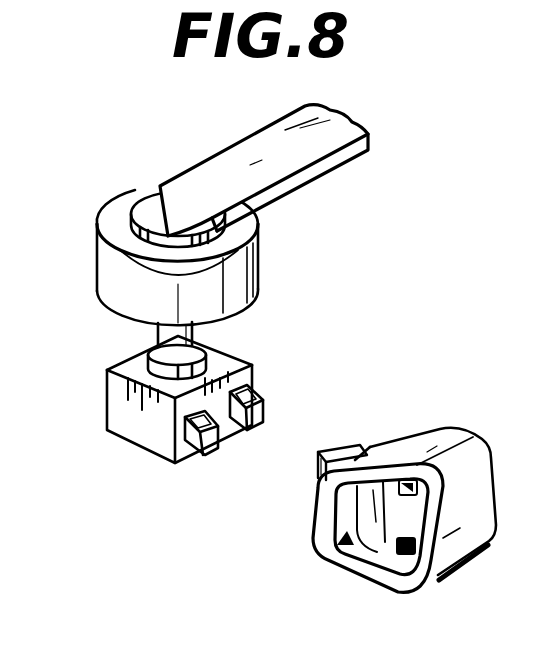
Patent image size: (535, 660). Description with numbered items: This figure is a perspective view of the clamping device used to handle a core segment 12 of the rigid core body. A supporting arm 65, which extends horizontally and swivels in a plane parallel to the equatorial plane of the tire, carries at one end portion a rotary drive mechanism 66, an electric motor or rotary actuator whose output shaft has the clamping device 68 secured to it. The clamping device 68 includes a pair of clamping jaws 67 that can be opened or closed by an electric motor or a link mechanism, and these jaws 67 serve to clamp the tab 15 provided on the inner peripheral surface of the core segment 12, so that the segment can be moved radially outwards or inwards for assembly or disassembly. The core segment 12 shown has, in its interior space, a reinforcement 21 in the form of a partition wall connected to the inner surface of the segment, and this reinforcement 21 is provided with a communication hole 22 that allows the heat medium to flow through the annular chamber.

The core segment 12 is at (443, 430).
The tab 15 is at (340, 446).
The reinforcement 21 is at (363, 511).
The communication hole 22 is at (401, 555).
The supporting arm 65 is at (265, 135).
The rotary drive mechanism 66 is at (110, 216).
The clamping jaws 67 is at (222, 448).
The clamping device 68 is at (116, 359).